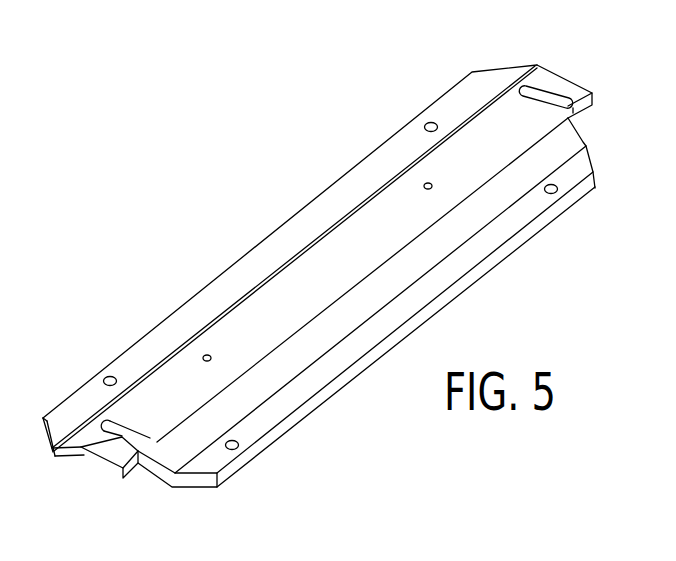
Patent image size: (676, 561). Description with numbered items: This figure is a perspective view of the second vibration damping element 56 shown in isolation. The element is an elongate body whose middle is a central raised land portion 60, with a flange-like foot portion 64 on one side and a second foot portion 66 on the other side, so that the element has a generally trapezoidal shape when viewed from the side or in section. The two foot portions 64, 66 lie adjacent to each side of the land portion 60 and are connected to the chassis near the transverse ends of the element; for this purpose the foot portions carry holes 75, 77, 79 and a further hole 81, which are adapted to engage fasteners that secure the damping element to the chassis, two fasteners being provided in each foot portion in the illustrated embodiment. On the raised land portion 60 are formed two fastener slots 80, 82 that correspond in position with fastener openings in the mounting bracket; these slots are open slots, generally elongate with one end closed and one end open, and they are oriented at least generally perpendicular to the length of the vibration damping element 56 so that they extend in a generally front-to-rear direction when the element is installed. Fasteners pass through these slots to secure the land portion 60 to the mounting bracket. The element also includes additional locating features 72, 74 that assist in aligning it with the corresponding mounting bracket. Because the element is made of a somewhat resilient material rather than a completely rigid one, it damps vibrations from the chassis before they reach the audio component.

The second vibration damping element 56 is at (314, 178).
The raised land portion 60 is at (238, 327).
The foot portion 64 is at (252, 268).
The foot portion 66 is at (297, 398).
The locating feature 72 is at (204, 357).
The locating feature 74 is at (427, 183).
The hole 75 is at (105, 379).
The hole 77 is at (239, 447).
The hole 79 is at (432, 121).
The mounting hole 81 is at (558, 190).
The fastener slot 80 is at (120, 438).
The fastener slot 82 is at (547, 98).